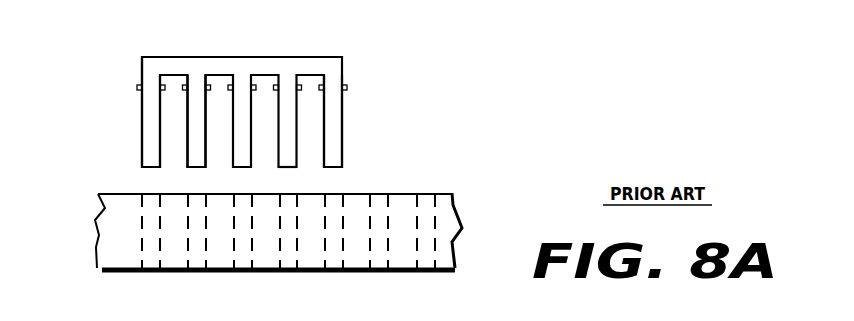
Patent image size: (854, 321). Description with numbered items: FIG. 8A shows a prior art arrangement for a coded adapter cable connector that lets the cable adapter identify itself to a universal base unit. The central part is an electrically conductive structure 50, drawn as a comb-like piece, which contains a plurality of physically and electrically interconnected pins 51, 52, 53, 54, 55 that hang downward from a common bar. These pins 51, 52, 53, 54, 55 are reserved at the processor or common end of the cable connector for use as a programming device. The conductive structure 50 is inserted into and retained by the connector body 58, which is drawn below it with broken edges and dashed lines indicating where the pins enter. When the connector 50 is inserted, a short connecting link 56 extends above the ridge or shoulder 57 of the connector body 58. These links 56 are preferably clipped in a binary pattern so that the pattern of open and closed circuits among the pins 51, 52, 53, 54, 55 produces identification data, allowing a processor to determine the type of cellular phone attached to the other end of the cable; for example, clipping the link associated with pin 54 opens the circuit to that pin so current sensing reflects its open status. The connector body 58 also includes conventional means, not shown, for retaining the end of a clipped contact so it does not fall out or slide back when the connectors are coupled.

The electrically conductive structure 50 is at (158, 57).
The pin 51 is at (150, 72).
The pin 52 is at (187, 142).
The pin 53 is at (233, 84).
The pin 54 is at (296, 168).
The pin 55 is at (335, 128).
The connecting link 56 is at (337, 72).
The ridge or shoulder 57 is at (347, 87).
The connector body 58 is at (115, 218).